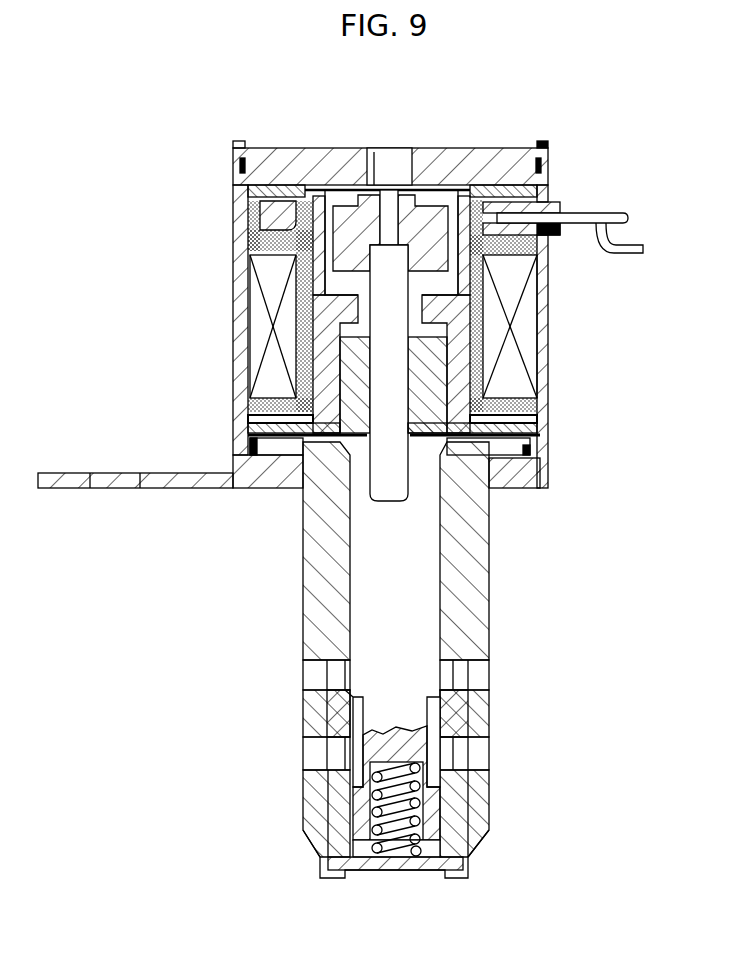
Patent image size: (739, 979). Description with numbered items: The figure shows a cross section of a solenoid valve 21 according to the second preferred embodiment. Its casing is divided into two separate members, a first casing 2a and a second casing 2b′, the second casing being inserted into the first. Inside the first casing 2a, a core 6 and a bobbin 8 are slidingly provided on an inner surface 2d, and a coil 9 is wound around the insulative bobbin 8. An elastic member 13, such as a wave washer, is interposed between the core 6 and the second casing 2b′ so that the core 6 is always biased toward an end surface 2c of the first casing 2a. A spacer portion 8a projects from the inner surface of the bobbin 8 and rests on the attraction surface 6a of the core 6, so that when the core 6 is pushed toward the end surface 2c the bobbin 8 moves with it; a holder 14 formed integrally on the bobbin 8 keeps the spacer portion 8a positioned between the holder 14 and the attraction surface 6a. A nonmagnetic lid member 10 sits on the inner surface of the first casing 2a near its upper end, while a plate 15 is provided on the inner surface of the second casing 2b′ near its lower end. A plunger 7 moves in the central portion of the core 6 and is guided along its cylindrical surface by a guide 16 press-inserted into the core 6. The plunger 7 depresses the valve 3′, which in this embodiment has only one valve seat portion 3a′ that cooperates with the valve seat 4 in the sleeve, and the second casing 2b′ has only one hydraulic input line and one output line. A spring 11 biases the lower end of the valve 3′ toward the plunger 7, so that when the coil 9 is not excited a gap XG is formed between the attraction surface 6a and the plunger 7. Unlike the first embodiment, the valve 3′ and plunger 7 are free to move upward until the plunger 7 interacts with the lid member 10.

The lid member 10 is at (272, 165).
The spacer portion 8a is at (306, 190).
The attraction surface 6a is at (340, 293).
The plunger 7 is at (433, 291).
The holder 14 is at (472, 192).
The end surface 2c is at (542, 147).
The inner surface 2d is at (253, 285).
The core 6 is at (320, 345).
The bobbin 8 is at (262, 405).
The gap XG is at (460, 285).
The coil 9 is at (532, 343).
The first casing 2a is at (538, 405).
The solenoid valve 21 is at (586, 462).
The guide 16 is at (495, 492).
The elastic member 13 is at (530, 488).
The valve 3′ is at (362, 552).
The second casing 2b′ is at (489, 598).
The valve seat portion 3a′ is at (330, 728).
The first valve seat 4 is at (463, 783).
The spring 11 is at (395, 852).
The plate 15 is at (442, 860).